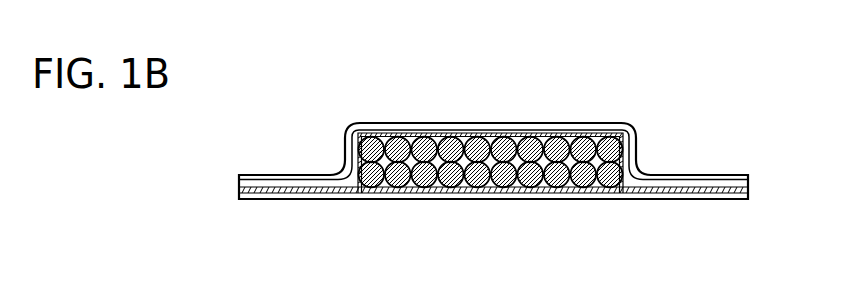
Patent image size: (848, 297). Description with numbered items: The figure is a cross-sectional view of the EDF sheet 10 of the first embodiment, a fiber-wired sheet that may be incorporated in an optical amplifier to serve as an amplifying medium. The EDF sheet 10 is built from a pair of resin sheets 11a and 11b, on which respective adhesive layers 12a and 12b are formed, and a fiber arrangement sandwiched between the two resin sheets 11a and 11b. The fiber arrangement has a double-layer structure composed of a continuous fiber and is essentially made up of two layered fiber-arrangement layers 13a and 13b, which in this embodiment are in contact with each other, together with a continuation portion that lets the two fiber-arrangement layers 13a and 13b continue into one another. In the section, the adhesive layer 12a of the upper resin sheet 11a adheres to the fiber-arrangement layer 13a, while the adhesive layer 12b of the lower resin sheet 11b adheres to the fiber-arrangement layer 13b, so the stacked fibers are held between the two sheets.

The EDF sheet 10 is at (740, 80).
The resin sheet 11a is at (571, 124).
The resin sheet 11b is at (562, 197).
The adhesive layer 12a is at (343, 178).
The adhesive layer 12b is at (357, 194).
The fiber-arrangement layer 13a is at (624, 143).
The fiber-arrangement layer 13b is at (624, 168).